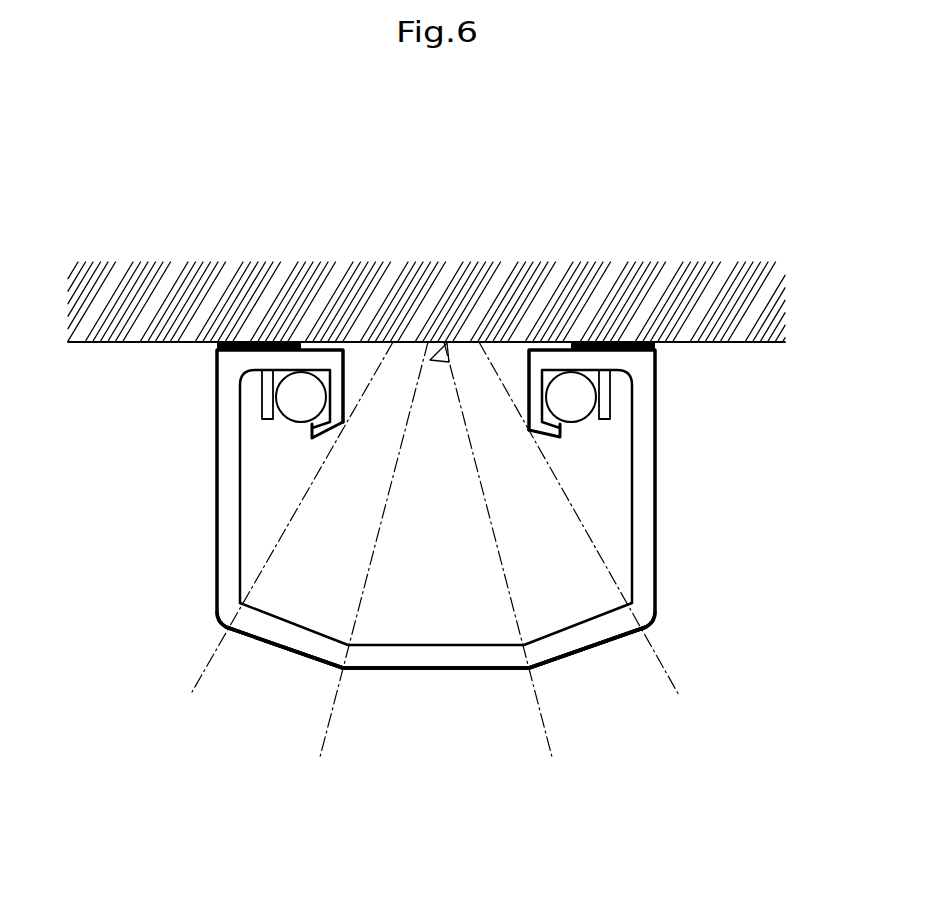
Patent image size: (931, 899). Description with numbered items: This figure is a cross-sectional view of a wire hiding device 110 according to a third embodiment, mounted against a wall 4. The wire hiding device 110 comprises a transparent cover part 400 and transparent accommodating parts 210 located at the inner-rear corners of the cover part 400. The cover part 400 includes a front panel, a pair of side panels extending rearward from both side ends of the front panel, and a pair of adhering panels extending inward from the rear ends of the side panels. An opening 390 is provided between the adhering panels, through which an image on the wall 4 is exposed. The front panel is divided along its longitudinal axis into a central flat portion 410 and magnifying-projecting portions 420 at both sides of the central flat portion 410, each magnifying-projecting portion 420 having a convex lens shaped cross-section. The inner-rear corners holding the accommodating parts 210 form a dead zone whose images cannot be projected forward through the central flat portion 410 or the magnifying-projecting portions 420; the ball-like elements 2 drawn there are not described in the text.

The ball 2 is at (290, 402).
The wall 4 is at (755, 343).
The wire hiding device 110 is at (207, 580).
The accommodating part 210 is at (275, 432).
The opening 390 is at (447, 343).
The cover part 400 is at (318, 677).
The central flat portion 410 is at (438, 660).
The magnifying-projecting portion 420 is at (278, 640).